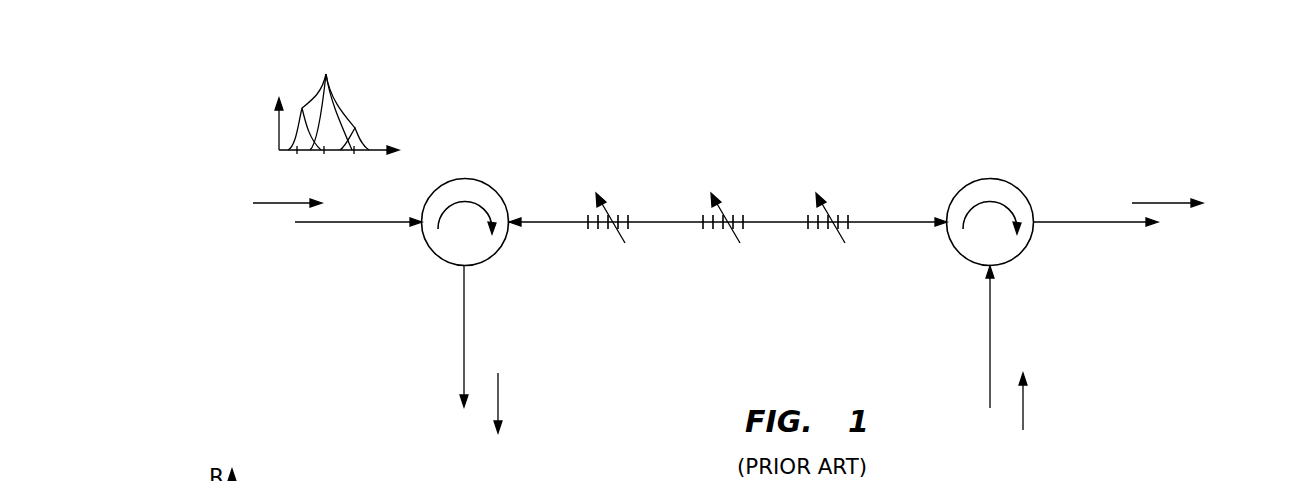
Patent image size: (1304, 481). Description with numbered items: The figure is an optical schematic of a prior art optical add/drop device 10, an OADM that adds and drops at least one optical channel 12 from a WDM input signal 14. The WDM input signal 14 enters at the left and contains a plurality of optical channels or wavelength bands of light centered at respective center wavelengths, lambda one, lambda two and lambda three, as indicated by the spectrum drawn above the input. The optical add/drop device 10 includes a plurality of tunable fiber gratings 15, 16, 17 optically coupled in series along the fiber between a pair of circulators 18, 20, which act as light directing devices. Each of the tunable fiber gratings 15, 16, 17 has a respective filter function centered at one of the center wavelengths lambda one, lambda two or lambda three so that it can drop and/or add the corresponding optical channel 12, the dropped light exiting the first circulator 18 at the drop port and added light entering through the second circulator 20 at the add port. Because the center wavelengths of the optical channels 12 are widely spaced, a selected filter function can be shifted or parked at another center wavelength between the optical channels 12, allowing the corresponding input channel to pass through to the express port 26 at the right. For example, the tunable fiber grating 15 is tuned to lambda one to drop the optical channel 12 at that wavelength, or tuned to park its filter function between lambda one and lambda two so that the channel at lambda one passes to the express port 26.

The optical add/drop device 10 is at (755, 244).
The optical channel 12 is at (337, 113).
The WDM input signal 14 is at (262, 206).
The tunable fiber grating 15 is at (605, 208).
The tunable fiber grating 16 is at (720, 208).
The tunable fiber grating 17 is at (825, 208).
The circulator 18 is at (468, 178).
The circulator 20 is at (995, 177).
The express port 26 is at (1113, 225).